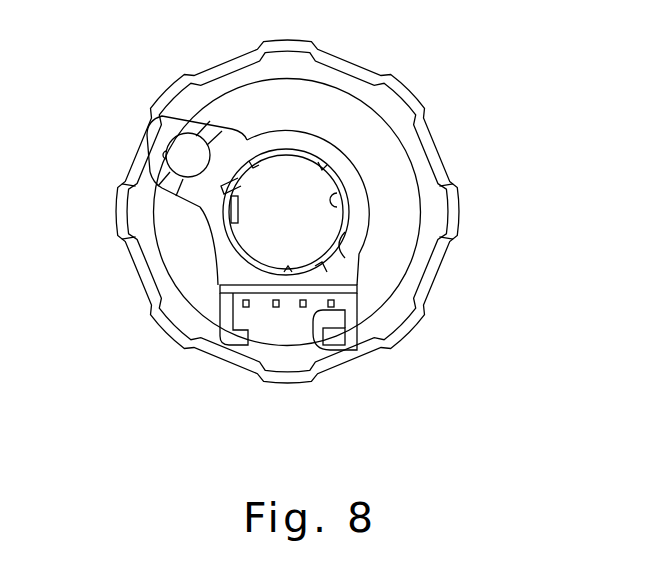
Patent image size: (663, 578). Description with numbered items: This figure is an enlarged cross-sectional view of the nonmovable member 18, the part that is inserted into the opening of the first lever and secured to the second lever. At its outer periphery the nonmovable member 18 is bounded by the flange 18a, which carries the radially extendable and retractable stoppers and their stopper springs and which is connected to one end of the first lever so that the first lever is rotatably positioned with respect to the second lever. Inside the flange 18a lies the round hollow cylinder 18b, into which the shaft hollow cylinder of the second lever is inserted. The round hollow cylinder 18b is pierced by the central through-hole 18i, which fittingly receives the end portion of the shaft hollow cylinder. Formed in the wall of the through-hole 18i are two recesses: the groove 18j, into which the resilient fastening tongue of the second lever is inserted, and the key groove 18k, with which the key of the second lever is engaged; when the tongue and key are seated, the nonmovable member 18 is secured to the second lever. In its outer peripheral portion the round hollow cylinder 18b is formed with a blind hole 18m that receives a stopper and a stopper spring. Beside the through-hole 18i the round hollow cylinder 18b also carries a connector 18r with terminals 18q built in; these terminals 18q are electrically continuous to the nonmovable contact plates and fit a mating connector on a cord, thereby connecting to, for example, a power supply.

The nonmovable member 18 is at (195, 353).
The flange 18a is at (138, 270).
The round hollow cylinder 18b is at (333, 143).
The through-hole 18i is at (343, 205).
The groove 18j is at (352, 250).
The key groove 18k is at (258, 152).
The blind hole 18m is at (170, 150).
The terminals 18q is at (277, 310).
The connector 18r is at (380, 348).